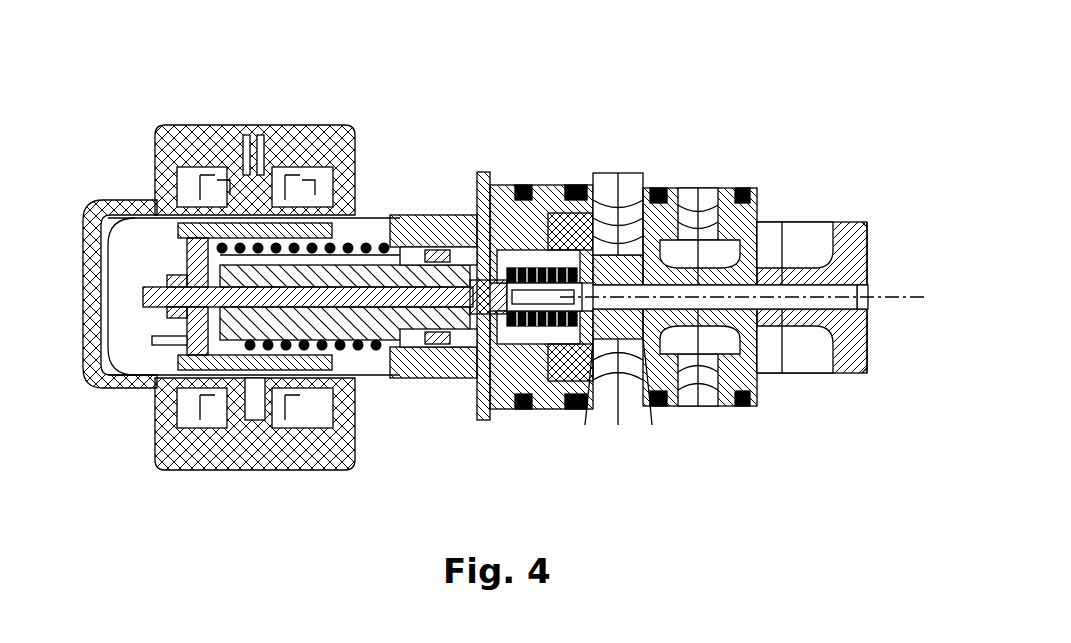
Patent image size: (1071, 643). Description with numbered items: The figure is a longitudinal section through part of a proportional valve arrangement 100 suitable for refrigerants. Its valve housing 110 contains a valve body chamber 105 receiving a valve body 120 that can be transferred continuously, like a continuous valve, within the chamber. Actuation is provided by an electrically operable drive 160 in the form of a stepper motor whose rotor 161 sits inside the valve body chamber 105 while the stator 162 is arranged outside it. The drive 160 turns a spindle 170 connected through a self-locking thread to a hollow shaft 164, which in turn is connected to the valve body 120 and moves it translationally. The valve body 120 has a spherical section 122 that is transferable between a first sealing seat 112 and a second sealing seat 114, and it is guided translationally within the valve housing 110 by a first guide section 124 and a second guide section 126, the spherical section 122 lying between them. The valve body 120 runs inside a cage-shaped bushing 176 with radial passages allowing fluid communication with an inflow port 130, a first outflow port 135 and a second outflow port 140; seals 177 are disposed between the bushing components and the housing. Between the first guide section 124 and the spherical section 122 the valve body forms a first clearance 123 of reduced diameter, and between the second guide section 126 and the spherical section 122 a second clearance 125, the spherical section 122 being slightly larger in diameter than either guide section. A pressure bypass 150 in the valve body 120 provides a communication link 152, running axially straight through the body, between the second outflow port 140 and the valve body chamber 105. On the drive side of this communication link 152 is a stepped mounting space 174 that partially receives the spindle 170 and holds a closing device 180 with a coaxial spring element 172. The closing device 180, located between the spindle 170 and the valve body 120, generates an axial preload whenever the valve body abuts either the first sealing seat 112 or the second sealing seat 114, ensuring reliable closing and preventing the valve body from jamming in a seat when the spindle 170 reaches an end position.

The proportional valve arrangement 100 is at (742, 148).
The valve body chamber 105 is at (453, 340).
The valve housing 110 is at (440, 215).
The first sealing seat 112 is at (690, 205).
The second sealing seat 114 is at (703, 222).
The valve body 120 is at (855, 328).
The spherical section 122 is at (797, 235).
The first clearance 123 is at (642, 408).
The first guide section 124 is at (590, 409).
The second clearance 125 is at (813, 335).
The second guide section 126 is at (852, 245).
The inflow port 130 is at (712, 188).
The first outflow port 135 is at (607, 175).
The second outflow port 140 is at (800, 228).
The pressure bypass 150 is at (855, 290).
The communication link 152 is at (758, 277).
The electrically operable drive 160 is at (300, 122).
The rotor 161 is at (180, 368).
The stator 162 is at (255, 404).
The hollow shaft 164 is at (386, 342).
The spindle 170 is at (143, 288).
The spring element 172 is at (502, 200).
The stepped mounting space 174 is at (583, 303).
The cage-shaped bushing 176 is at (662, 392).
The seals 177 is at (573, 185).
The closing device 180 is at (532, 284).